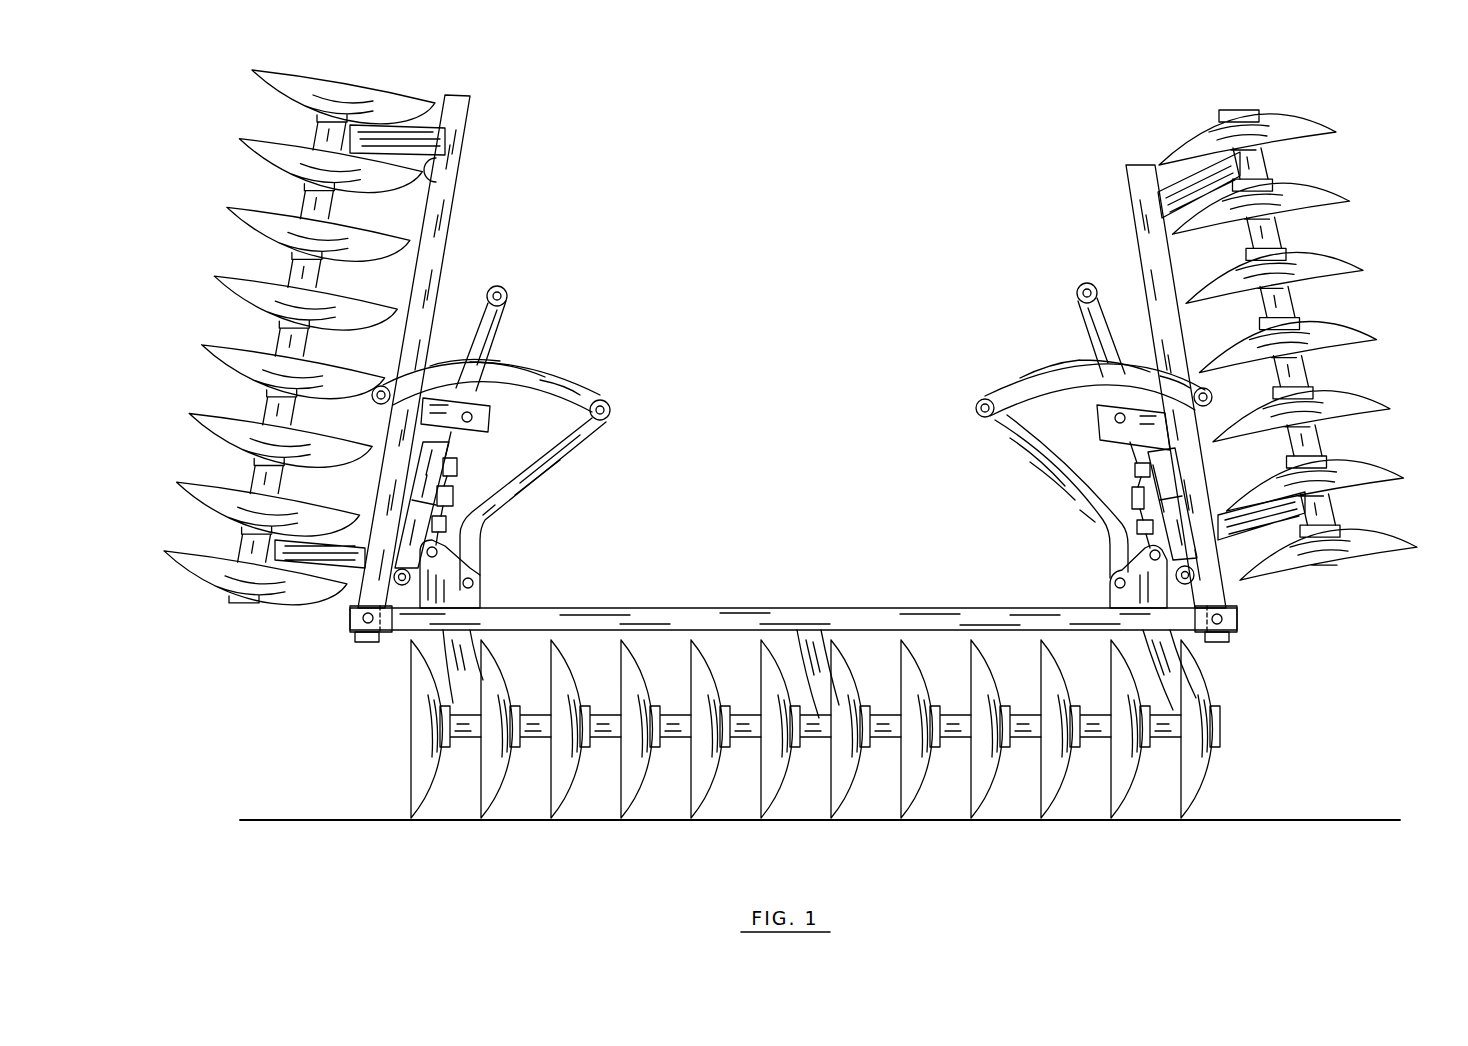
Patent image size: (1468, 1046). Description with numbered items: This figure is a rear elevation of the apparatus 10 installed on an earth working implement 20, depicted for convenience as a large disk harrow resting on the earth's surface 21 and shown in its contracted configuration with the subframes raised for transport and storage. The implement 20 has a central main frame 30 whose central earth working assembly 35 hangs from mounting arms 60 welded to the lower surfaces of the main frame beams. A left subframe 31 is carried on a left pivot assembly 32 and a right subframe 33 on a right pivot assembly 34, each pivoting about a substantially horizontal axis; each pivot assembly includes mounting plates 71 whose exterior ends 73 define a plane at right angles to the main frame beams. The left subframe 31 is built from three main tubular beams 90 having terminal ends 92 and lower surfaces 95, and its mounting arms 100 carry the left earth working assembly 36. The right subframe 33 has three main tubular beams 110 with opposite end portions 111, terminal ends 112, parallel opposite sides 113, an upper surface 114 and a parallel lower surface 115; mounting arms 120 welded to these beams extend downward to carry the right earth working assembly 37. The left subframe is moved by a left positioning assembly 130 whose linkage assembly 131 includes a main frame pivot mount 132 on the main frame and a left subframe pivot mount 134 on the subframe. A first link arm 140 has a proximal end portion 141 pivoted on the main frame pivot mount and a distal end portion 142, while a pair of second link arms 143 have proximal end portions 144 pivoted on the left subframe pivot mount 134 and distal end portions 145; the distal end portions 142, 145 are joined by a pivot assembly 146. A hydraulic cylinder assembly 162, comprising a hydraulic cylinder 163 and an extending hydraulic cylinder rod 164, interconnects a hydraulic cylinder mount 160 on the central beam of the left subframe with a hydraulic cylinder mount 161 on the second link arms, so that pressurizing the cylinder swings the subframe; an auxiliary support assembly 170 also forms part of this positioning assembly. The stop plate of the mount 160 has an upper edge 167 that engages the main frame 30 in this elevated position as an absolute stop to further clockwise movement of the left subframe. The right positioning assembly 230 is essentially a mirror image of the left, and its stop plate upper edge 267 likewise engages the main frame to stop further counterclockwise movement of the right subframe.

The apparatus 10 is at (1303, 333).
The earth working implement 20 is at (1308, 628).
The earth's surface 21 is at (1303, 816).
The central main frame 30 is at (735, 608).
The left subframe 31 is at (455, 197).
The left pivot assembly 32 is at (358, 632).
The right subframe 33 is at (1147, 230).
The right pivot assembly 34 is at (1227, 641).
The central earth working assembly 35 is at (697, 791).
The left earth working assembly 36 is at (207, 570).
The right earth working assembly 37 is at (1388, 542).
The mounting arms 60 is at (478, 612).
The mounting plates 71 is at (419, 613).
The exterior ends 73 is at (349, 618).
The main tubular beams 90 is at (432, 268).
The terminal ends 92 is at (460, 94).
The lower surfaces 95 is at (440, 168).
The mounting arms 100 is at (418, 138).
The main tubular beams 110 is at (1153, 264).
The opposite end portions 111 is at (1138, 186).
The terminal ends 112 is at (1138, 160).
The parallel opposite sides 113 is at (1147, 205).
The upper surface 114 is at (1152, 292).
The lower surface 115 is at (1165, 263).
The mounting arms 120 is at (1188, 190).
The left positioning assembly 130 is at (485, 455).
The linkage assembly 131 is at (592, 372).
The main frame pivot mount 132 is at (478, 583).
The left subframe pivot mount 134 is at (389, 384).
The first link arm 140 is at (533, 478).
The proximal end portion 141 is at (475, 560).
The distal end portion 142 is at (596, 420).
The second link arms 143 is at (533, 365).
The proximal end portions 144 is at (445, 358).
The distal end portions 145 is at (596, 398).
The pivot assembly 146 is at (614, 408).
The hydraulic cylinder mount 160 is at (373, 588).
The hydraulic cylinder mount 161 is at (470, 350).
The hydraulic cylinder assembly 162 is at (433, 507).
The hydraulic cylinder 163 is at (437, 480).
The hydraulic cylinder rod 164 is at (468, 401).
The upper edge 167 is at (392, 624).
The auxiliary support assembly 170 is at (478, 468).
The right positioning assembly 230 is at (1046, 445).
The upper edge 267 is at (1112, 606).